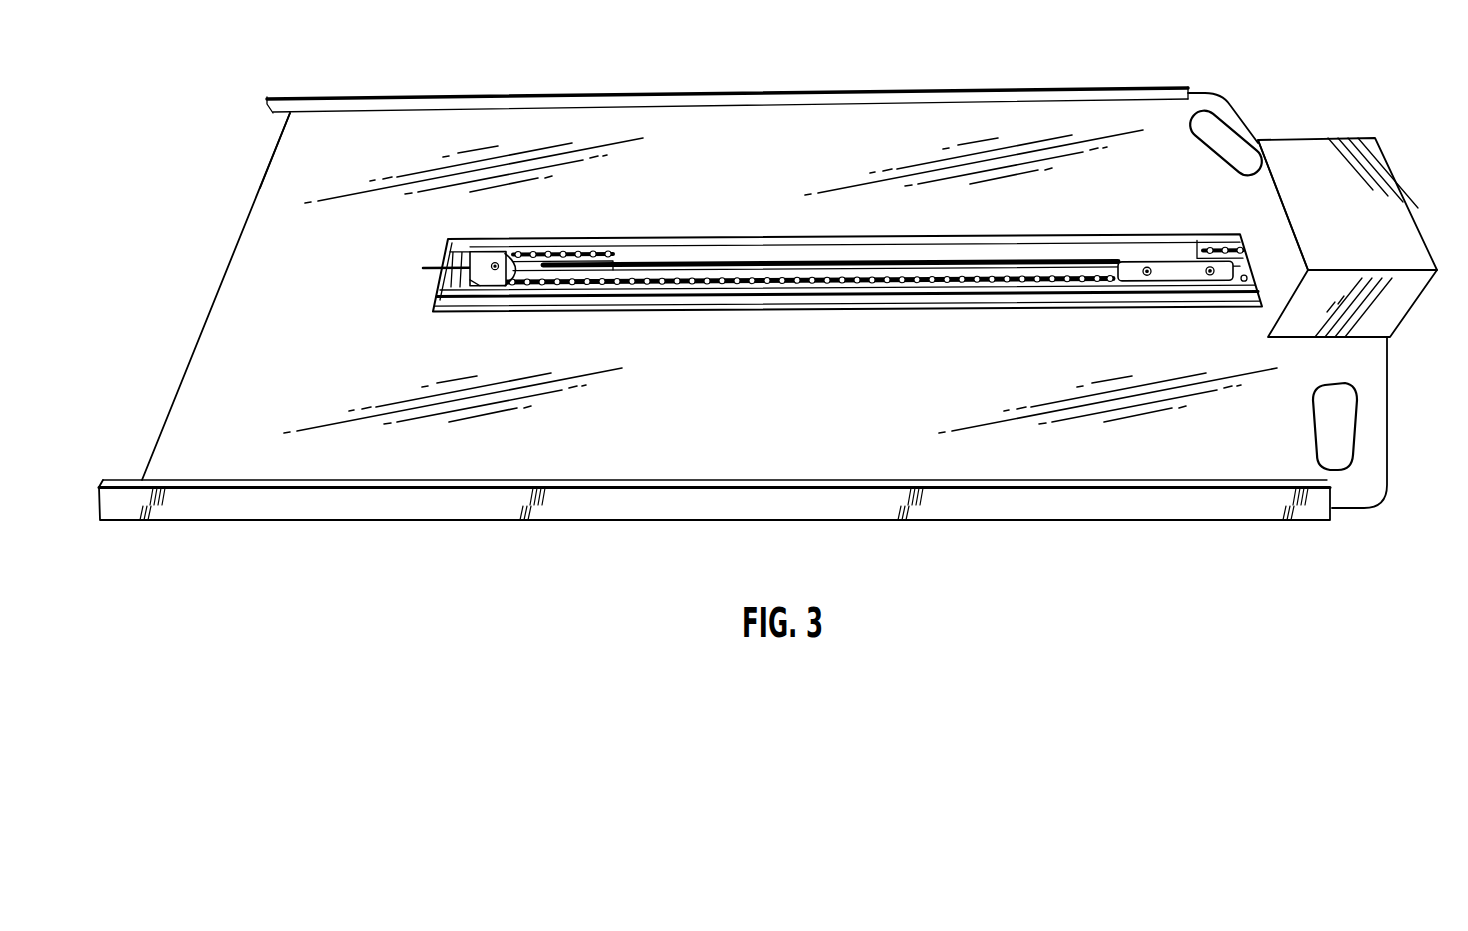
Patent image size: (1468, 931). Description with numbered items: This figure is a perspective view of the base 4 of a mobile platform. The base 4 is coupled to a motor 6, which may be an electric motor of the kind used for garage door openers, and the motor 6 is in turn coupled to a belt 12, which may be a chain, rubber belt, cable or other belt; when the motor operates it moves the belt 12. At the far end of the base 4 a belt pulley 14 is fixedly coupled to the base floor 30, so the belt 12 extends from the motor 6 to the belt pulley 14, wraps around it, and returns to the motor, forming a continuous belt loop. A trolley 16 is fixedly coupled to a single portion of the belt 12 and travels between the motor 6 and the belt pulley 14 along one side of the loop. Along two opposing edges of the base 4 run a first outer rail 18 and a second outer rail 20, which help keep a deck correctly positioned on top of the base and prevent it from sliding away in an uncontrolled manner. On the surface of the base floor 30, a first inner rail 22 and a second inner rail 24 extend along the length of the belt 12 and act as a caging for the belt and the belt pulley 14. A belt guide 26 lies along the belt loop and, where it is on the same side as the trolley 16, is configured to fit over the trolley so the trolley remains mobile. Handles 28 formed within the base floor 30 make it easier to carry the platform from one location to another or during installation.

The base 4 is at (1189, 464).
The motor 6 is at (1310, 152).
The belt 12 is at (962, 289).
The belt pulley 14 is at (503, 254).
The trolley 16 is at (1165, 271).
The first outer rail 18 is at (988, 505).
The second outer rail 20 is at (1088, 88).
The first inner rail 22 is at (528, 308).
The second inner rail 24 is at (597, 239).
The belt guide 26 is at (1083, 237).
The handle 28 is at (1217, 123).
The base floor 30 is at (243, 258).